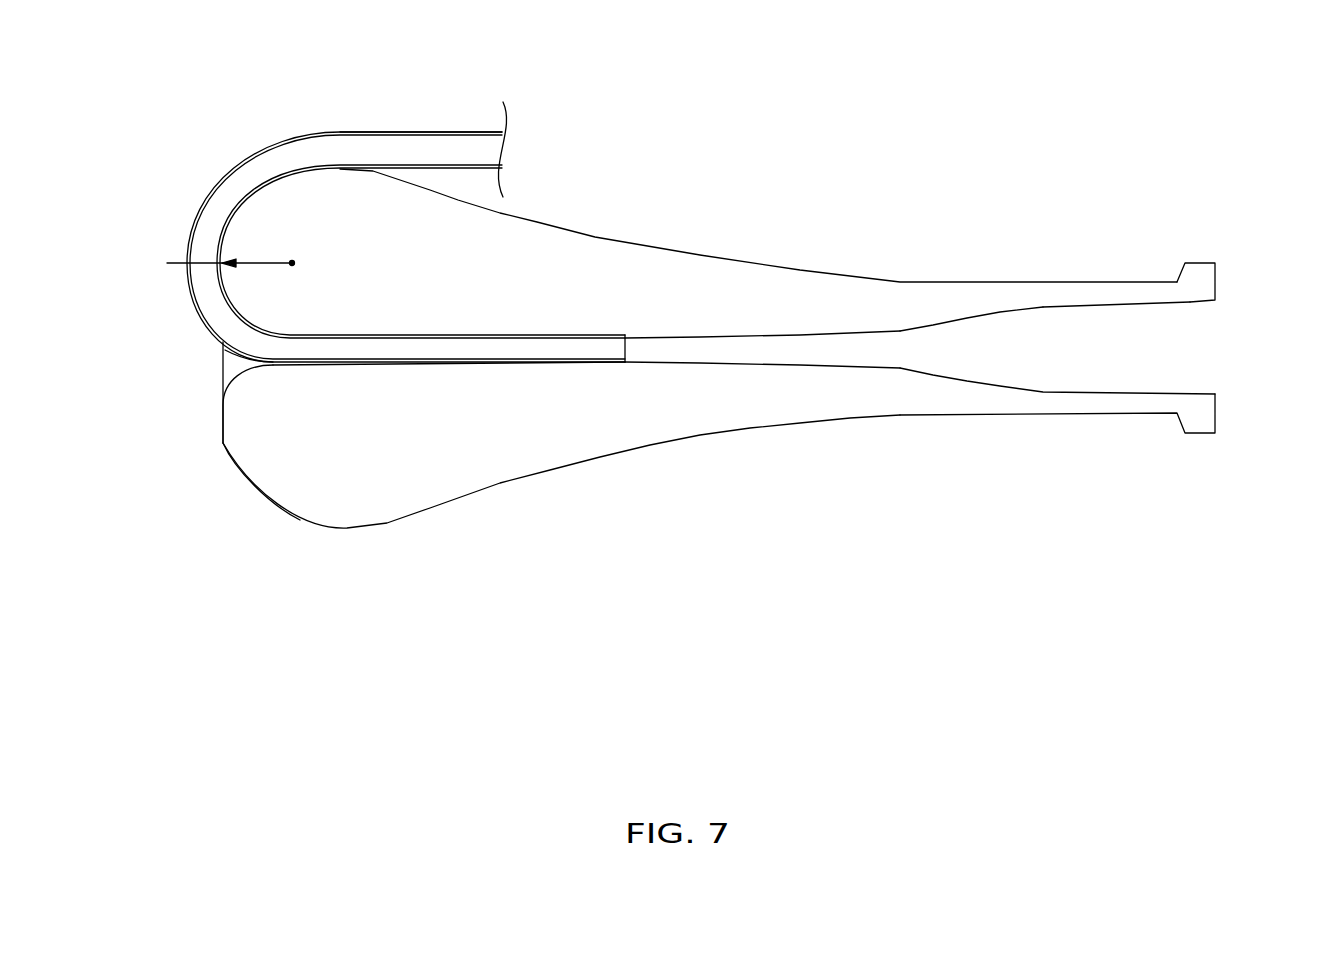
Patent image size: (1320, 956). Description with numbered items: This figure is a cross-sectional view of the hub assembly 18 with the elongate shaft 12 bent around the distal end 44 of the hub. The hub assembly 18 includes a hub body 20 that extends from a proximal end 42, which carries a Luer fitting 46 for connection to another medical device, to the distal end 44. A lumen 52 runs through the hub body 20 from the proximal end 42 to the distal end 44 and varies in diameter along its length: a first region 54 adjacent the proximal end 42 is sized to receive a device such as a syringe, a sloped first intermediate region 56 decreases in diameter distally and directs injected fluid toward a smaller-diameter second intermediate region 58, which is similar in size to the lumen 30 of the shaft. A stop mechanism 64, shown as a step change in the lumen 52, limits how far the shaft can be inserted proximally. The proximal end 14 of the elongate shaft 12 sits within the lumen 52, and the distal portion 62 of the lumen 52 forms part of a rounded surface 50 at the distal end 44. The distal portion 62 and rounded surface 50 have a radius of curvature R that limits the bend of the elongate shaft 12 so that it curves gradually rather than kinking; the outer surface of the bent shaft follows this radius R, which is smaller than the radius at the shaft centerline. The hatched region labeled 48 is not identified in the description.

The hub assembly 18 is at (808, 90).
The elongate shaft 12 is at (282, 141).
The lumen 30 is at (422, 132).
The radius of curvature R is at (221, 263).
The upper core portion 48 is at (595, 237).
The second intermediate region 58 is at (698, 348).
The first intermediate region 56 is at (945, 343).
The first region 54 is at (1133, 315).
The Luer fitting 46 is at (1203, 277).
The proximal end 42 is at (1215, 433).
The lumen 52 is at (1077, 372).
The hub body 20 is at (862, 418).
The proximal end 14 is at (505, 367).
The stop mechanism 64 is at (625, 340).
The distal portion 62 is at (235, 362).
The distal end 44 is at (223, 437).
The rounded surface 50 is at (250, 488).